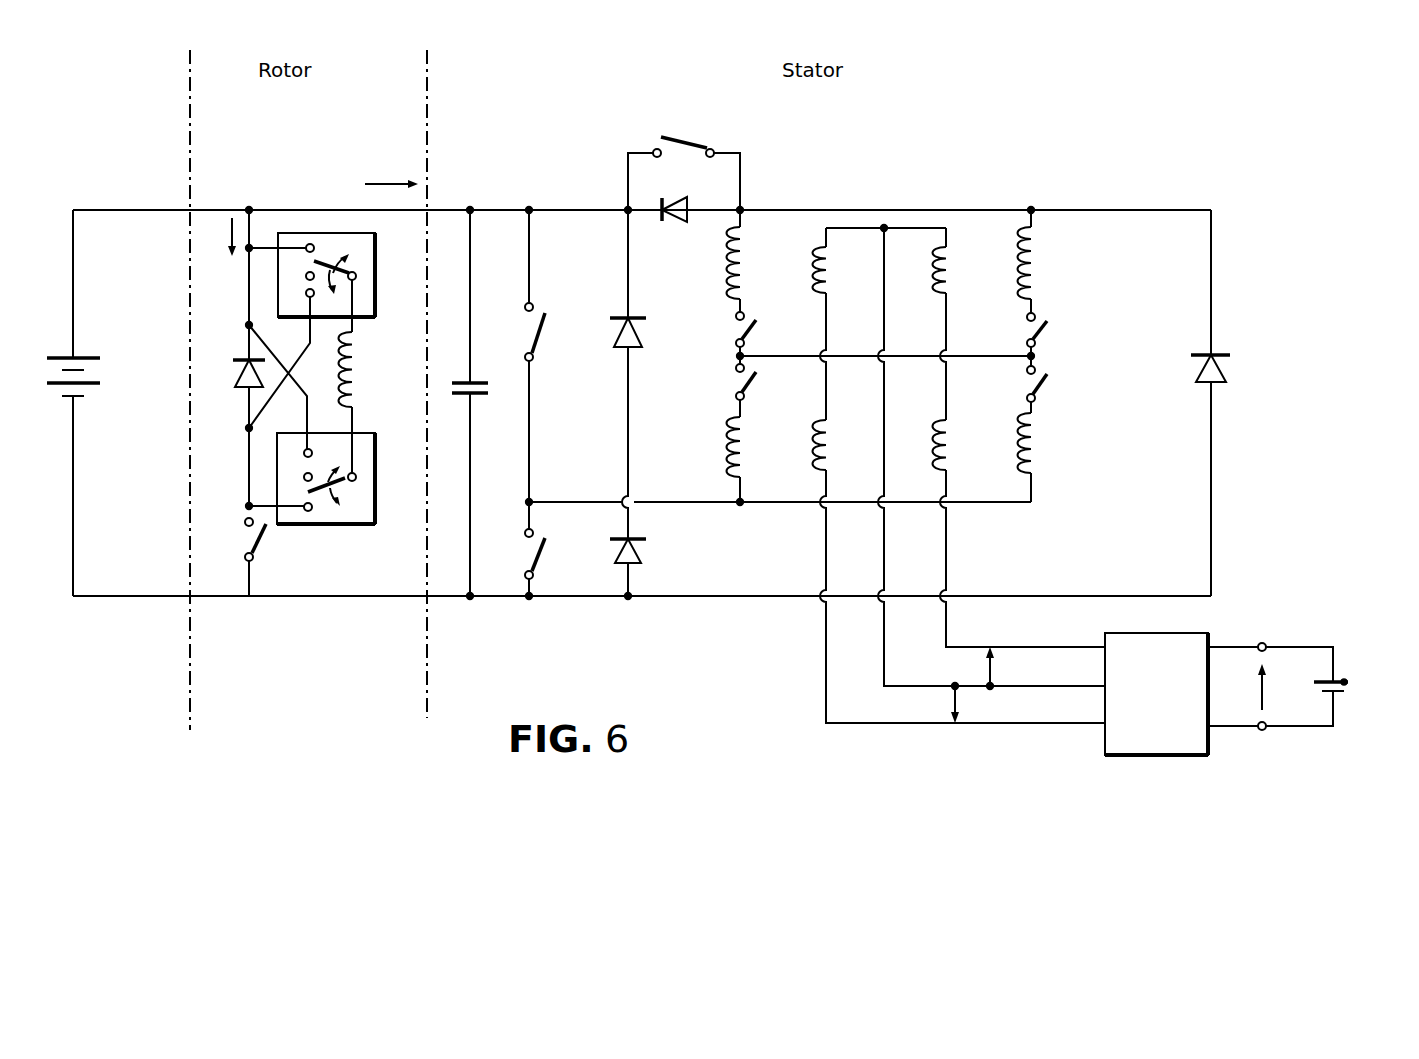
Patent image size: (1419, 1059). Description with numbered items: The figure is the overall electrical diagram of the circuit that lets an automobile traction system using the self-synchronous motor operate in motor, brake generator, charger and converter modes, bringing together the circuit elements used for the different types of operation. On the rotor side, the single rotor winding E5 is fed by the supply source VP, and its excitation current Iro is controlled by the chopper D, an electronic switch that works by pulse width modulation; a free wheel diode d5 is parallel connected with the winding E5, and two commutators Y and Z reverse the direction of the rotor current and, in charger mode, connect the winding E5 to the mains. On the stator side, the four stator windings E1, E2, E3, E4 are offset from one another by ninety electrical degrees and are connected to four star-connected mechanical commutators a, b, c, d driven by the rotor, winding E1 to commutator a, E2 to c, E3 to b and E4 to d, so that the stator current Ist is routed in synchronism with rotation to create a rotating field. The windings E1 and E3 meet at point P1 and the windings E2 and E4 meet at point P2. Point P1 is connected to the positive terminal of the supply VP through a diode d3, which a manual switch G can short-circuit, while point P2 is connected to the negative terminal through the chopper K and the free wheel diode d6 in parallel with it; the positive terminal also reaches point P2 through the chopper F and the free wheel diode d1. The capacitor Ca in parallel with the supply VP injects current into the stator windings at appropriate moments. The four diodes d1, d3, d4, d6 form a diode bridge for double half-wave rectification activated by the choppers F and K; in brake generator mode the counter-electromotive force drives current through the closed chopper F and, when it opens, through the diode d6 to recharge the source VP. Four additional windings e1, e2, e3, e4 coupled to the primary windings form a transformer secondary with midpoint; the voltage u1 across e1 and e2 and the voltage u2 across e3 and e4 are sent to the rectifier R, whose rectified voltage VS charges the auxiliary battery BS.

The supply source VP is at (79, 364).
The rotor current Iro is at (214, 237).
The stator current Ist is at (390, 170).
The free wheel diode d5 is at (232, 372).
The commutator Y is at (335, 243).
The commutator Z is at (350, 515).
The rotor winding E5 is at (366, 369).
The chopper D is at (261, 540).
The capacitor Ca is at (477, 403).
The chopper F is at (541, 332).
The chopper K is at (542, 554).
The free wheel diode d1 is at (639, 338).
The free wheel diode d6 is at (639, 557).
The manual switch G is at (684, 161).
The diode d3 is at (671, 224).
The connection point P1 is at (745, 207).
The connection point P2 is at (740, 505).
The stator winding E1 is at (754, 263).
The stator winding E2 is at (754, 447).
The commutator a is at (752, 329).
The commutator c is at (751, 382).
The additional stator winding e1 is at (838, 270).
The additional stator winding e2 is at (838, 445).
The additional stator winding e3 is at (959, 270).
The additional stator winding e4 is at (958, 445).
The stator winding E3 is at (1045, 263).
The stator winding E4 is at (1044, 443).
The commutator b is at (1042, 330).
The commutator d is at (1042, 384).
The diode d4 is at (1224, 370).
The voltage u1 is at (941, 704).
The voltage u2 is at (1003, 666).
The rectifier R is at (1146, 742).
The rectified voltage VS is at (1277, 687).
The auxiliary battery BS is at (1347, 685).